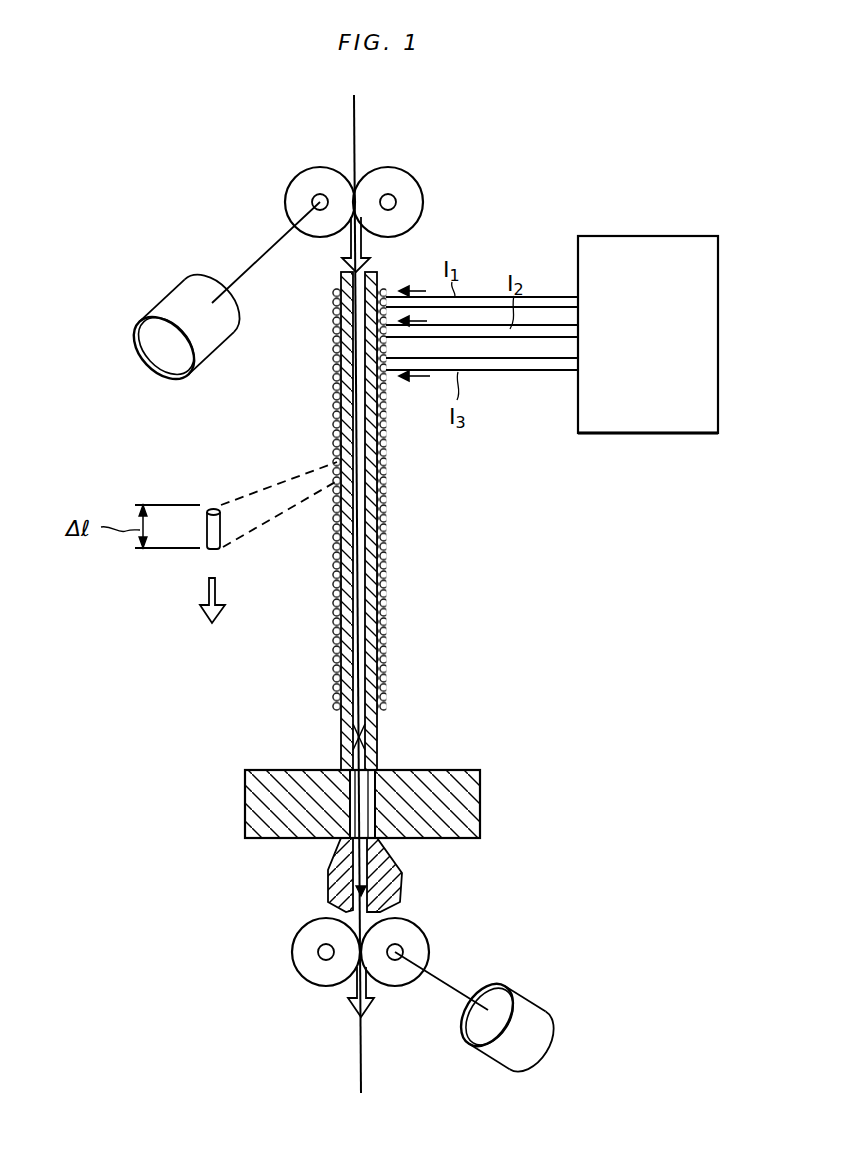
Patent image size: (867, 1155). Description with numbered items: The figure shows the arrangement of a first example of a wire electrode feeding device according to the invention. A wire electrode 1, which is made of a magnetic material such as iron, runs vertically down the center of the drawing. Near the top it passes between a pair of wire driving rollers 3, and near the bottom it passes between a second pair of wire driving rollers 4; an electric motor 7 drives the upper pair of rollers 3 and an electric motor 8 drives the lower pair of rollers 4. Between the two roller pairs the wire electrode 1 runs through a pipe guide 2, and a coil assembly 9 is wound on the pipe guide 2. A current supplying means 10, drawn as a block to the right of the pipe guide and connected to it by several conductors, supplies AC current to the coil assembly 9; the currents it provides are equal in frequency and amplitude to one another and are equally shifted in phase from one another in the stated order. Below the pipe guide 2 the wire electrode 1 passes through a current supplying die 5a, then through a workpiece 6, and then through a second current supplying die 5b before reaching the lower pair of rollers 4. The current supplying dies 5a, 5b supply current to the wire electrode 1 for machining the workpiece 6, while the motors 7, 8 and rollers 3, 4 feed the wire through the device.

The wire electrode 1 is at (356, 108).
The pipe guide 2 is at (358, 624).
The pair of wire driving rollers 3 is at (302, 172).
The pair of wire driving rollers 4 is at (293, 942).
The current supplying die 5a is at (364, 733).
The current supplying die 5b is at (402, 880).
The workpiece 6 is at (481, 806).
The electric motor 7 is at (217, 356).
The electric motor 8 is at (540, 998).
The coil assembly 9 is at (387, 541).
The current supplying means 10 is at (652, 434).